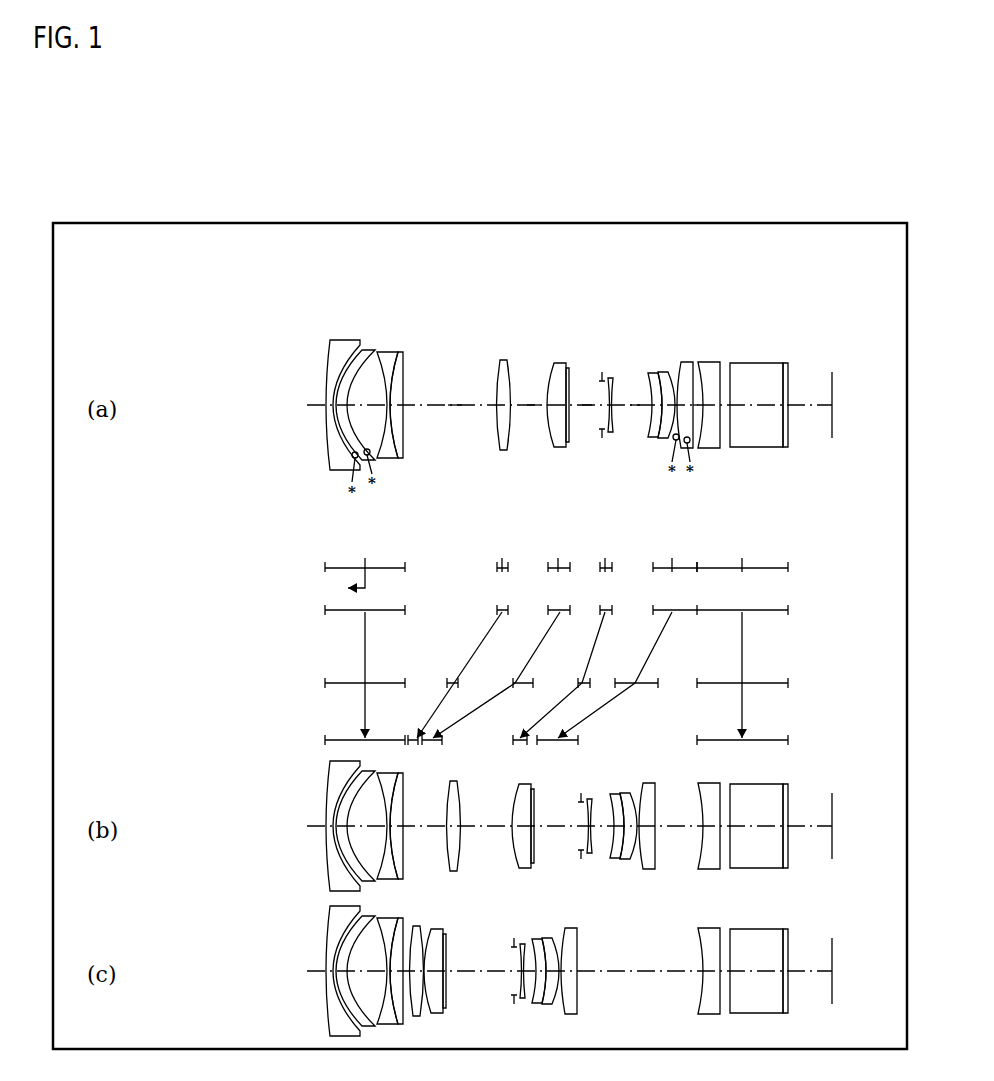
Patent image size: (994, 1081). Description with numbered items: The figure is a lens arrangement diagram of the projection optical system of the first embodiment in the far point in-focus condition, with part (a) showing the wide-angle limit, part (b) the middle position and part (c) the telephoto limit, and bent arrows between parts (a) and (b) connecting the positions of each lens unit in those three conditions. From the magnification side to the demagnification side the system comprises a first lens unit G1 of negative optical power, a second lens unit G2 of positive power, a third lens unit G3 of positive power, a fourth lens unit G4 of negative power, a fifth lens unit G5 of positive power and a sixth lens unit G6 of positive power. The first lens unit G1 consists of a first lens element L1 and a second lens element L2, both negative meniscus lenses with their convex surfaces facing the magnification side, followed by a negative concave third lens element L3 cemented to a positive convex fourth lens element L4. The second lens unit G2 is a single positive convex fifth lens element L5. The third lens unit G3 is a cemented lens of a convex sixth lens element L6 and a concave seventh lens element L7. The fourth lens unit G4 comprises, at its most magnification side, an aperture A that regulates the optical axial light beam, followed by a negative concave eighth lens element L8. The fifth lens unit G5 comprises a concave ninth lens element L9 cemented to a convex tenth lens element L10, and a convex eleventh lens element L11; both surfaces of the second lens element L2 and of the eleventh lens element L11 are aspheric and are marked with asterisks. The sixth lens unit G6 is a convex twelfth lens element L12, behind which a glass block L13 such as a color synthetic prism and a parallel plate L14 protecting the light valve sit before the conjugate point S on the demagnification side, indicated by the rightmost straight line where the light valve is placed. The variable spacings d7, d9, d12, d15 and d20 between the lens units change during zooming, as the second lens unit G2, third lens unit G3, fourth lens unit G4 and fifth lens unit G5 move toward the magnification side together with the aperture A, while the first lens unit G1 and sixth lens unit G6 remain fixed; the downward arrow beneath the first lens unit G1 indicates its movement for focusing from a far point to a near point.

The first lens element L1 is at (345, 343).
The second lens element L2 is at (360, 355).
The third lens element L3 is at (385, 357).
The fourth lens element L4 is at (398, 353).
The fifth lens element L5 is at (502, 362).
The sixth lens element L6 is at (557, 365).
The seventh lens element L7 is at (567, 368).
The aperture A is at (602, 374).
The eighth lens element L8 is at (610, 378).
The ninth lens element L9 is at (652, 377).
The tenth lens element L10 is at (663, 372).
The eleventh lens element L11 is at (683, 365).
The twelfth lens element L12 is at (712, 367).
The glass block L13 is at (758, 373).
The parallel plate L14 is at (787, 373).
The conjugate point on the demagnification side S is at (835, 393).
The variable air space d7 is at (448, 405).
The variable air space d9 is at (527, 405).
The variable air space d12 is at (582, 405).
The variable air space d15 is at (630, 405).
The variable air space d20 is at (695, 440).
The first lens unit G1 is at (365, 563).
The second lens unit G2 is at (507, 555).
The third lens unit G3 is at (563, 555).
The fourth lens unit G4 is at (613, 555).
The fifth lens unit G5 is at (677, 555).
The sixth lens unit G6 is at (742, 555).